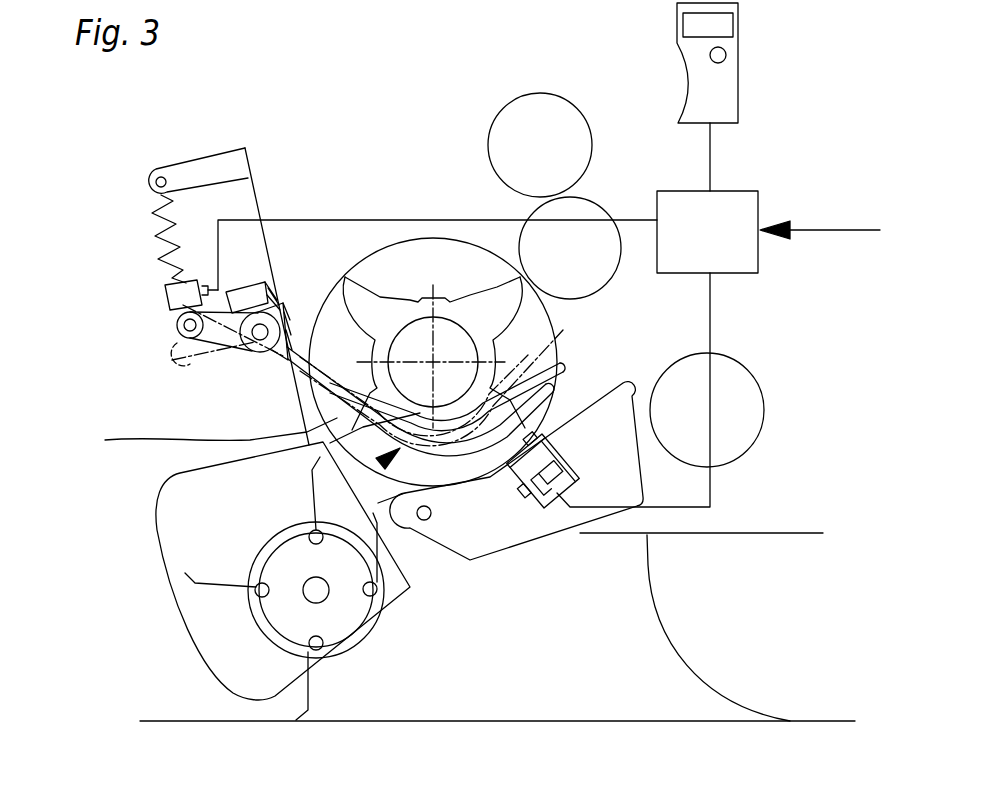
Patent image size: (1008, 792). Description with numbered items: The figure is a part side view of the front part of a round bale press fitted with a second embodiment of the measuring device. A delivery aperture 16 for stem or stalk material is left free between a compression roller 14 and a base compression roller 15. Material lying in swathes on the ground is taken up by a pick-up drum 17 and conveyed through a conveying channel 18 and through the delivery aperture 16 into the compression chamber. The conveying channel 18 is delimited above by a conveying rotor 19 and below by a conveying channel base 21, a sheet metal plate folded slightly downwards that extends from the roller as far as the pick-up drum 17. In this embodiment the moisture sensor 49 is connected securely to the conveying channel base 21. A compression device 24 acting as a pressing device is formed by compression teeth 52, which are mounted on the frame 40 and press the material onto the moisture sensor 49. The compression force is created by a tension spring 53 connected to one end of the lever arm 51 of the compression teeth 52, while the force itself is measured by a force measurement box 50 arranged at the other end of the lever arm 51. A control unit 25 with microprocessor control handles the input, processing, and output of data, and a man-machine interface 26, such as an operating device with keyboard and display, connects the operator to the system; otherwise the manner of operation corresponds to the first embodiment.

The frame 40 is at (245, 146).
The conveying rotor 19 is at (360, 295).
The compression roller 14 is at (530, 213).
The man-machine interface 26 is at (722, 78).
The control unit 25 is at (768, 232).
The delivery aperture 16 is at (497, 422).
The base compression roller 15 is at (760, 429).
The tension spring 53 is at (165, 238).
The force measurement box 50 is at (180, 298).
The lever arm 51 is at (217, 335).
The compression teeth 52 is at (315, 402).
The compression device 24 is at (407, 472).
The pick-up drum 17 is at (273, 625).
The conveying channel 18 is at (435, 467).
The conveying channel base 21 is at (477, 484).
The moisture sensor 49 is at (532, 467).